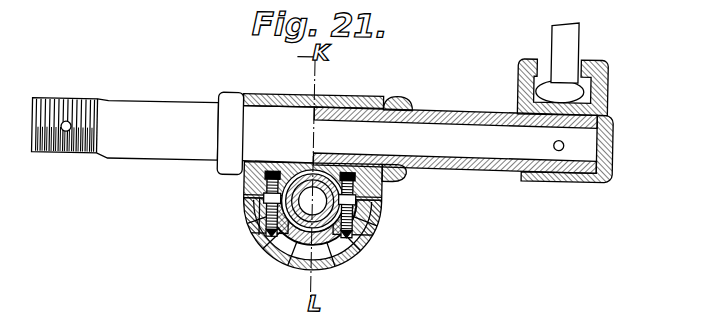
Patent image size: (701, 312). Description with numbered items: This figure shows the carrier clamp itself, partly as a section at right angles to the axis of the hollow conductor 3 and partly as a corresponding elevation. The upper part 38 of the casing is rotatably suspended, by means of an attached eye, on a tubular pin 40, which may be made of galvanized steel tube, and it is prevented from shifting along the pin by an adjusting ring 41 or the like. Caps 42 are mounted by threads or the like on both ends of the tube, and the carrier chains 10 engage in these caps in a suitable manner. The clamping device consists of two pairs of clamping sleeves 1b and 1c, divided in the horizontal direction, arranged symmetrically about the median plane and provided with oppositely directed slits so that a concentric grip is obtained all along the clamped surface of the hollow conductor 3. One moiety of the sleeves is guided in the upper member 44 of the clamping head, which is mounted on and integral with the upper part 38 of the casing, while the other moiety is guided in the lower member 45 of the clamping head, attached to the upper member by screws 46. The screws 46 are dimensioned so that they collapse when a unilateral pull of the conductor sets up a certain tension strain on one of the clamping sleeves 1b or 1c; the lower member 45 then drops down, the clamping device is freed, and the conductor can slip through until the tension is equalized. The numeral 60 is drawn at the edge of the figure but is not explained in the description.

The pin 10 is at (577, 31).
The sleeve 38 is at (369, 93).
The knurled shaft 40 is at (165, 88).
The collar 41 is at (234, 101).
The socket block 42 is at (608, 99).
The bearing hub 44 is at (383, 185).
The bushing 45 is at (333, 263).
The bolt 46 is at (264, 223).
The housing rim 1b is at (265, 259).
The housing section 1c is at (263, 191).
The base 3 is at (267, 236).
The member 60 is at (379, 306).